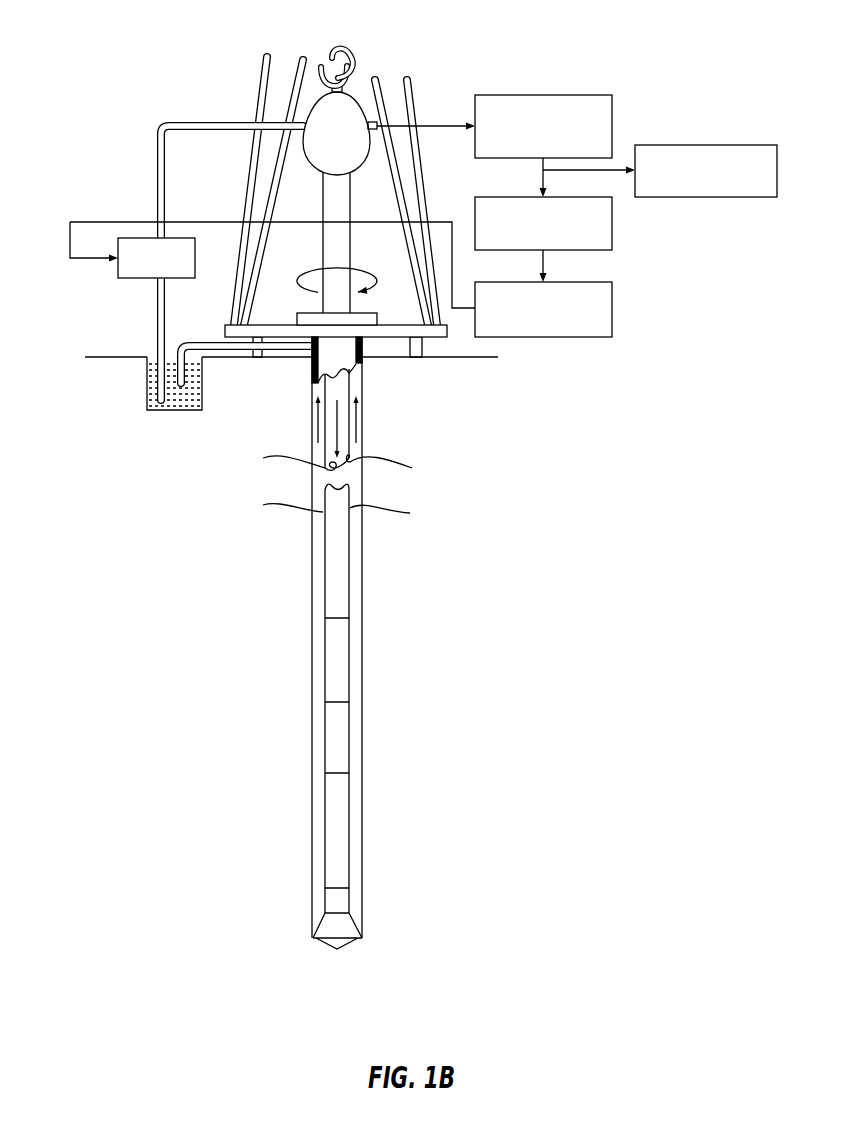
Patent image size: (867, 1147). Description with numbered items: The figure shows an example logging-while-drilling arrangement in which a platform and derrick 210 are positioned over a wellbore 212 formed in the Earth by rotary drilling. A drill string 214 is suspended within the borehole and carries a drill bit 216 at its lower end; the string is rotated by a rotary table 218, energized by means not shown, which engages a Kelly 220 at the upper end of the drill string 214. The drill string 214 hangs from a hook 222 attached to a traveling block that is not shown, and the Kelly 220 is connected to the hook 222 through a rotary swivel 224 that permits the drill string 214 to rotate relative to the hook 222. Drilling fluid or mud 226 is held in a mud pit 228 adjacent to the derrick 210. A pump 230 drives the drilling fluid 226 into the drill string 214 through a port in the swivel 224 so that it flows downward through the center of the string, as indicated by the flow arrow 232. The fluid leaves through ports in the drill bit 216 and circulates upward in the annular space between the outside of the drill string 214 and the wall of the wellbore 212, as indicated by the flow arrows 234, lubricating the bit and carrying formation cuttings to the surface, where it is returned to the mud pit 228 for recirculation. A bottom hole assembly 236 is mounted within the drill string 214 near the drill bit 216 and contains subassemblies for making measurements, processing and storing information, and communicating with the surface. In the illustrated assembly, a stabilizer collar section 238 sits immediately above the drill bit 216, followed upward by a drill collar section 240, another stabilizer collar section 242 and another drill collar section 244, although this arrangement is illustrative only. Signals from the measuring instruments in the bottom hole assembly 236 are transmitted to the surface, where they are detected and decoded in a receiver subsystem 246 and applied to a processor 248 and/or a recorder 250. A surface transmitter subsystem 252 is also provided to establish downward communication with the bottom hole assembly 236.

The platform and derrick 210 is at (459, 337).
The wellbore 212 is at (350, 480).
The drill string 214 is at (344, 546).
The drill bit 216 is at (333, 925).
The rotary table 218 is at (348, 321).
The Kelly 220 is at (336, 197).
The hook 222 is at (345, 56).
The rotary swivel 224 is at (332, 118).
The drilling fluid 226 is at (178, 395).
The mud pit 228 is at (147, 375).
The pump 230 is at (152, 238).
The flow arrow 232 is at (340, 440).
The flow arrows 234 is at (358, 428).
The bottom hole assembly 236 is at (411, 894).
The stabilizer collar section 238 is at (333, 812).
The drill collar section 240 is at (333, 738).
The stabilizer collar section 242 is at (333, 665).
The drill collar section 244 is at (324, 582).
The receiver subsystem 246 is at (556, 95).
The processor 248 is at (612, 235).
The recorder 250 is at (717, 145).
The surface transmitter subsystem 252 is at (612, 313).